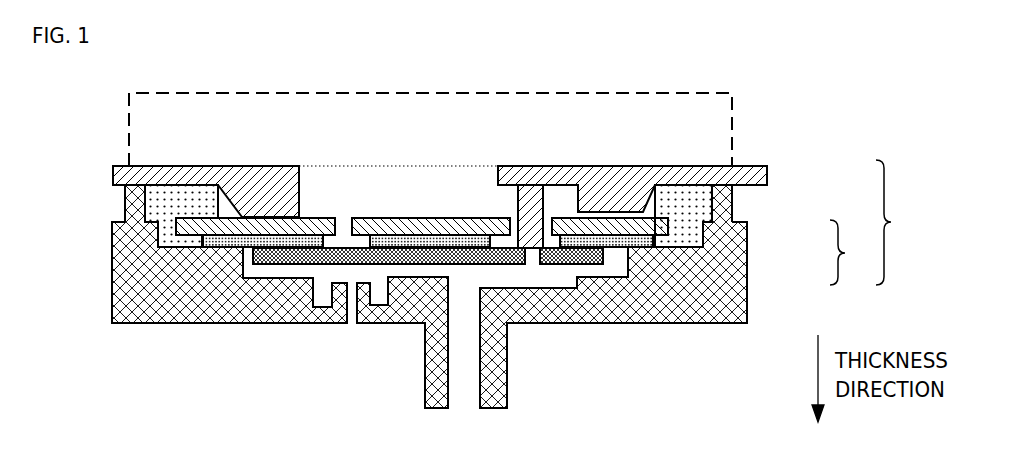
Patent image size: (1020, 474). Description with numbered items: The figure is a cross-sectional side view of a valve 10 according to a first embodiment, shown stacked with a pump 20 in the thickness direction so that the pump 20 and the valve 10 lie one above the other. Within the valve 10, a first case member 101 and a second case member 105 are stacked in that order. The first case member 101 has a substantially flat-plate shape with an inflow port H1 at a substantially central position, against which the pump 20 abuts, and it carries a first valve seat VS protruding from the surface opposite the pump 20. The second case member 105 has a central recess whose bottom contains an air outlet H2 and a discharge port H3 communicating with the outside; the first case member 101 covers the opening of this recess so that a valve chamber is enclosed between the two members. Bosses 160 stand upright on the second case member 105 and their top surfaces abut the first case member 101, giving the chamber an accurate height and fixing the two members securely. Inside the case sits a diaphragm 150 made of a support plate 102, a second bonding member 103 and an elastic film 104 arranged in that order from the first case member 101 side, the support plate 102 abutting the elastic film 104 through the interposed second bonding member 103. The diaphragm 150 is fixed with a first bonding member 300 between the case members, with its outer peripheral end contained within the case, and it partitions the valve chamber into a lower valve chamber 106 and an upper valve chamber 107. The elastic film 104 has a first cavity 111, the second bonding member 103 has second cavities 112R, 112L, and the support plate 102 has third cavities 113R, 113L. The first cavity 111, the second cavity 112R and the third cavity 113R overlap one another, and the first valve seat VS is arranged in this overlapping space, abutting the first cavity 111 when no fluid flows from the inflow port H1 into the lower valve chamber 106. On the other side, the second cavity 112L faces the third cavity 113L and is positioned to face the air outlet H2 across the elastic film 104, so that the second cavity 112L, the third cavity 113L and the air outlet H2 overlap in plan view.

The valve 10 is at (897, 222).
The pump 20 is at (733, 113).
The first case member 101 is at (767, 166).
The support plate 102 is at (662, 228).
The second bonding member 103 is at (650, 243).
The elastic film 104 is at (603, 257).
The second case member 105 is at (735, 288).
The lower valve chamber 106 is at (458, 180).
The upper valve chamber 107 is at (468, 287).
The first cavity 111 is at (530, 258).
The second cavity 112L is at (343, 238).
The second cavity 112R is at (548, 238).
The third cavity 113L is at (343, 222).
The third cavity 113R is at (545, 218).
The diaphragm 150 is at (853, 252).
The boss 160 is at (125, 205).
The first bonding member 300 is at (168, 215).
The inflow port H1 is at (430, 166).
The air outlet H2 is at (353, 320).
The discharge port H3 is at (465, 380).
The first valve seat VS is at (530, 193).